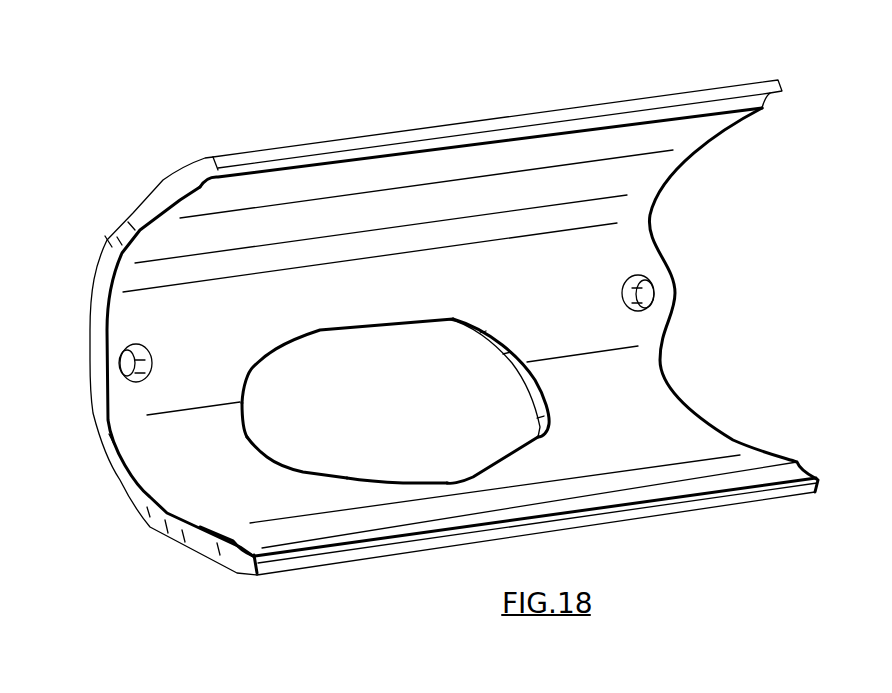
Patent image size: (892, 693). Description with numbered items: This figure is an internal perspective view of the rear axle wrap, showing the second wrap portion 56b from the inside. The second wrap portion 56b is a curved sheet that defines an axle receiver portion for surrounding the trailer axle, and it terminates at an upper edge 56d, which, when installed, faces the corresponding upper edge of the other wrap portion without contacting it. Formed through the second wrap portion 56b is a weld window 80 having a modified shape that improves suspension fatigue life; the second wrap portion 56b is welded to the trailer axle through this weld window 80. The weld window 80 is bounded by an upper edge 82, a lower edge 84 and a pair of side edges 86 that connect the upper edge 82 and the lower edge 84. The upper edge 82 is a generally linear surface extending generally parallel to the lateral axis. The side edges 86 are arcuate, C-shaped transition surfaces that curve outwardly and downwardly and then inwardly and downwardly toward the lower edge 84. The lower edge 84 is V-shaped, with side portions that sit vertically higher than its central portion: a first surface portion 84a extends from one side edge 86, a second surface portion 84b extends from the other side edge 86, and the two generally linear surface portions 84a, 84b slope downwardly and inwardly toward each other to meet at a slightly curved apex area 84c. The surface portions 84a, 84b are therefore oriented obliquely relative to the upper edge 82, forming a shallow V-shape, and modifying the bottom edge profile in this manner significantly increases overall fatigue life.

The second wrap portion 56b is at (108, 237).
The upper edge 56d is at (768, 81).
The weld window 80 is at (500, 318).
The upper edge 82 is at (363, 332).
The lower edge 84 is at (403, 483).
The first surface portion 84a is at (502, 455).
The second surface portion 84b is at (345, 478).
The apex area 84c is at (438, 483).
The side edges 86 is at (245, 423).